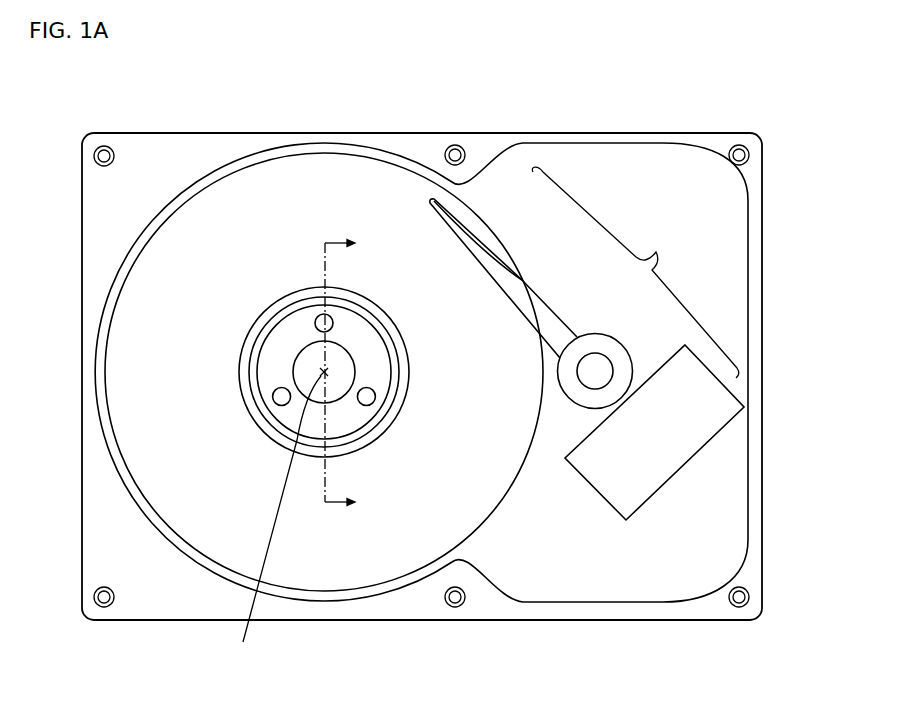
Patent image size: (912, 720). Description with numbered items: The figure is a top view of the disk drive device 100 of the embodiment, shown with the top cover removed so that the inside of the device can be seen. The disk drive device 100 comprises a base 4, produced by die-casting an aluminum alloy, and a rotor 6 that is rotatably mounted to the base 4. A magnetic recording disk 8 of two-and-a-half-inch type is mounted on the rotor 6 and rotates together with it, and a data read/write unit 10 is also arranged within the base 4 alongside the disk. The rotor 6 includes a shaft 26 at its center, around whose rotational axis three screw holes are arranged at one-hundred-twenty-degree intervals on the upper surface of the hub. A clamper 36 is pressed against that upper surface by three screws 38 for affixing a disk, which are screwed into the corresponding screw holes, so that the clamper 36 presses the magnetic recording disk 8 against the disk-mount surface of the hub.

The disk drive device 100 is at (388, 712).
The base 4 is at (763, 288).
The rotor 6 is at (322, 388).
The magnetic recording disk 8 is at (324, 193).
The data read/write unit 10 is at (657, 252).
The shaft 26 is at (335, 390).
The clamper 36 is at (280, 368).
The screws for affixing a disk 38 is at (358, 390).